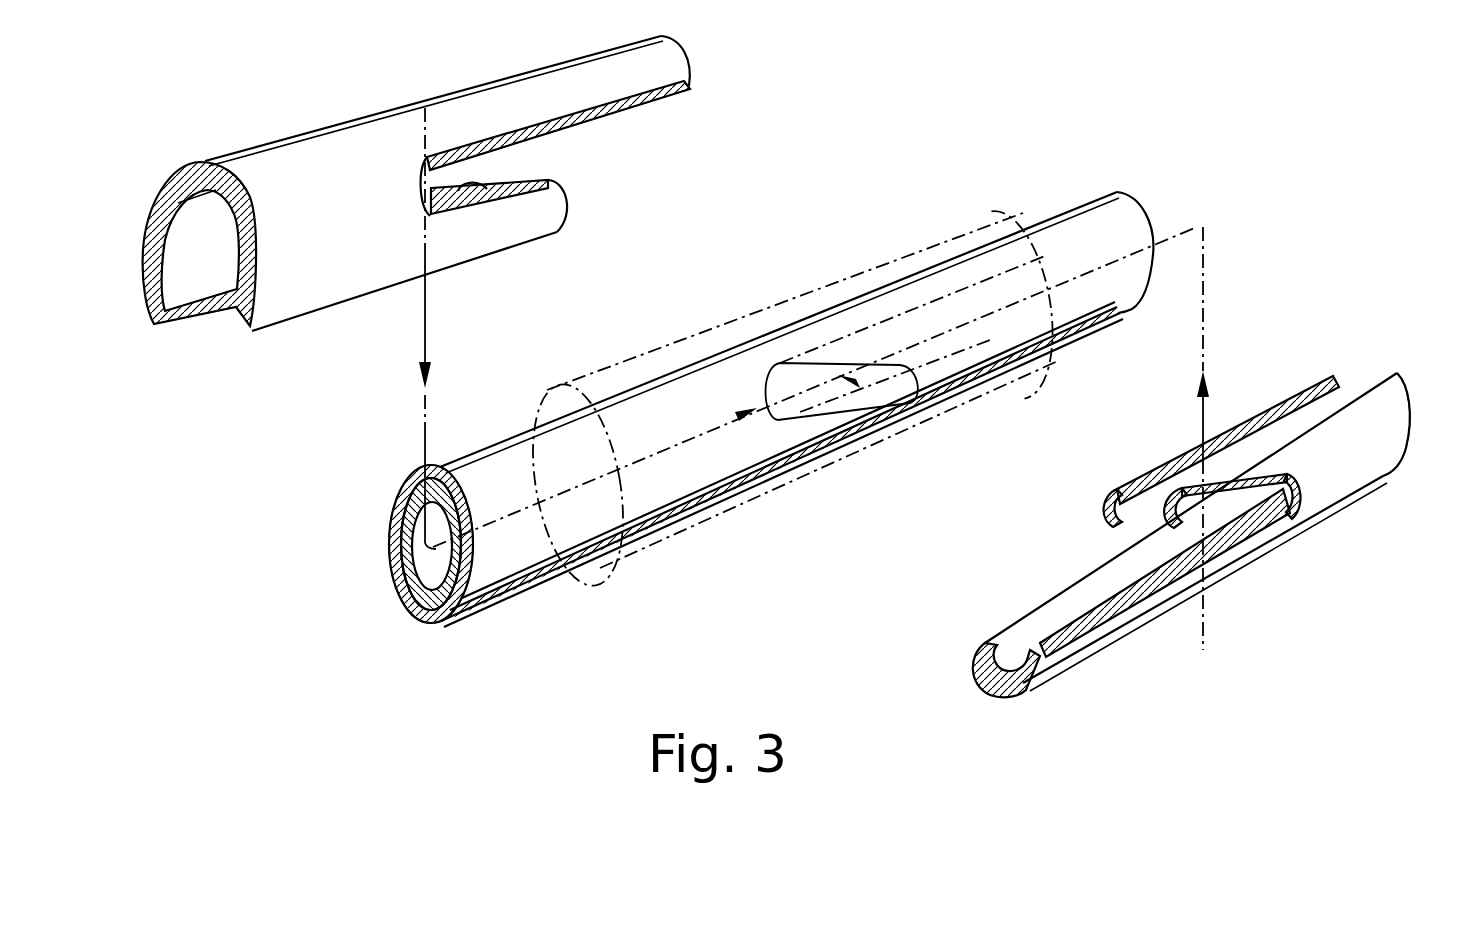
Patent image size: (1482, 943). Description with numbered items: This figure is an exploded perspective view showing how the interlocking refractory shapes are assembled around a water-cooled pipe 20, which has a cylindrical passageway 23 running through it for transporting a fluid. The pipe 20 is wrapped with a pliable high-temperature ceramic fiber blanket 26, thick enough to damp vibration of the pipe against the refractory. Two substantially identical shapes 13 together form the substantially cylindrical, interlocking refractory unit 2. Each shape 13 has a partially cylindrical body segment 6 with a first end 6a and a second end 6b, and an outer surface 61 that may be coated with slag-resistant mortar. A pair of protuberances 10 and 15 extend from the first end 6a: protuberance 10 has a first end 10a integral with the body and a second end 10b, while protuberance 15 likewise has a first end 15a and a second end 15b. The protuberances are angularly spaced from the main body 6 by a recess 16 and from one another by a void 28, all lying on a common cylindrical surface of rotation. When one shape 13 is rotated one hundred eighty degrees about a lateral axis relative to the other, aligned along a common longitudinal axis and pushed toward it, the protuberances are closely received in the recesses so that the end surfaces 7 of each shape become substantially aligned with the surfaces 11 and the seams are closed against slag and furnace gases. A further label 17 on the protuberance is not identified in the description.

The refractory unit 2 is at (1193, 285).
The shape 13 is at (444, 83).
The protuberance 15 is at (1220, 450).
The body segment 6 is at (503, 103).
The first end 6a is at (312, 277).
The second end 6b is at (680, 86).
The end surface 7 is at (683, 50).
The outer surface 61 is at (248, 146).
The surface 11 is at (162, 193).
The protuberance 10 is at (462, 237).
The first end 10a is at (417, 243).
The second end 10b is at (537, 213).
The recess 16 is at (1253, 587).
The slot end 17 is at (594, 202).
The void 28 is at (212, 308).
The first end 15a is at (1302, 405).
The second end 15b is at (1133, 503).
The cylindrical passageway 23 is at (397, 583).
The water-cooled pipe 20 is at (410, 590).
The ceramic fiber blanket 26 is at (430, 623).